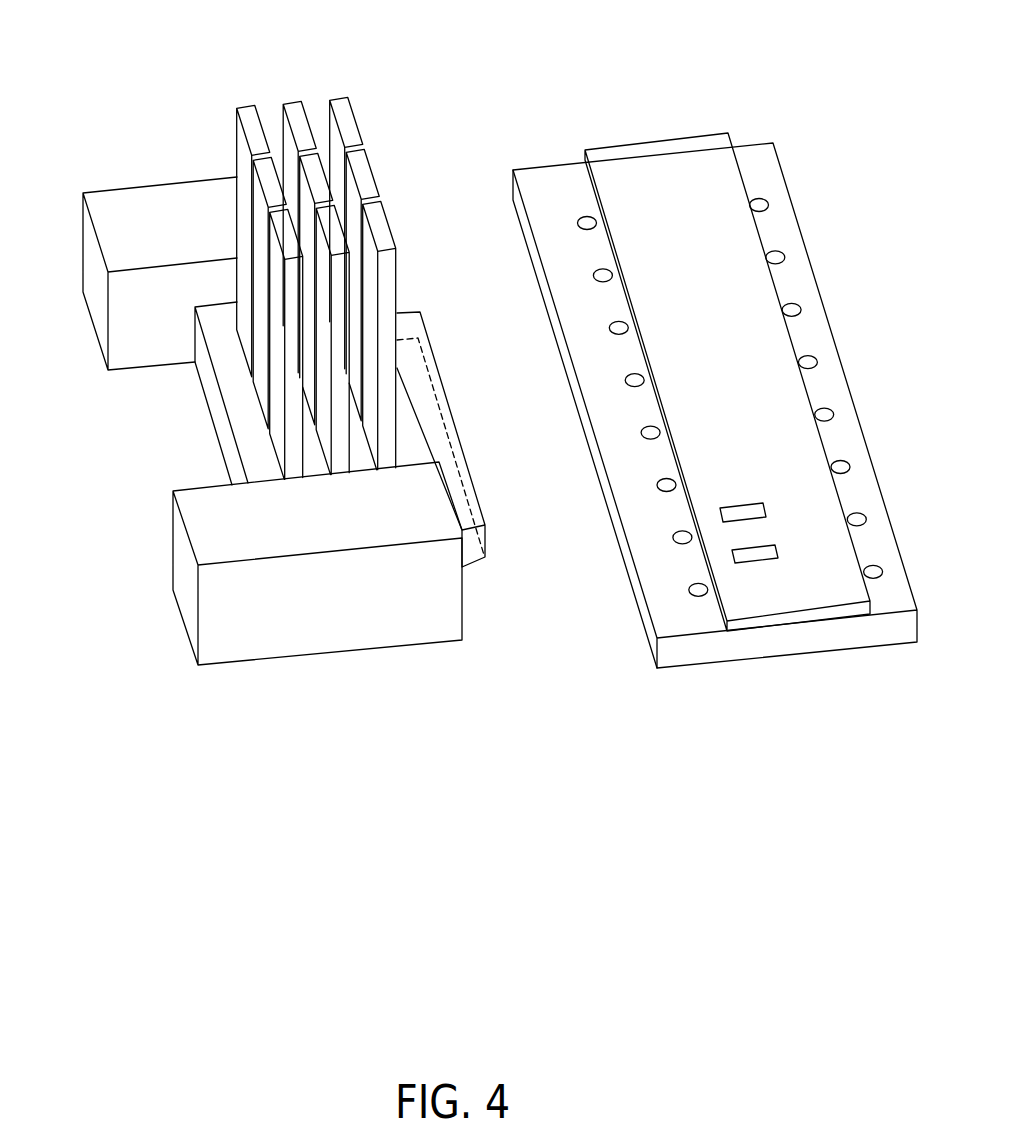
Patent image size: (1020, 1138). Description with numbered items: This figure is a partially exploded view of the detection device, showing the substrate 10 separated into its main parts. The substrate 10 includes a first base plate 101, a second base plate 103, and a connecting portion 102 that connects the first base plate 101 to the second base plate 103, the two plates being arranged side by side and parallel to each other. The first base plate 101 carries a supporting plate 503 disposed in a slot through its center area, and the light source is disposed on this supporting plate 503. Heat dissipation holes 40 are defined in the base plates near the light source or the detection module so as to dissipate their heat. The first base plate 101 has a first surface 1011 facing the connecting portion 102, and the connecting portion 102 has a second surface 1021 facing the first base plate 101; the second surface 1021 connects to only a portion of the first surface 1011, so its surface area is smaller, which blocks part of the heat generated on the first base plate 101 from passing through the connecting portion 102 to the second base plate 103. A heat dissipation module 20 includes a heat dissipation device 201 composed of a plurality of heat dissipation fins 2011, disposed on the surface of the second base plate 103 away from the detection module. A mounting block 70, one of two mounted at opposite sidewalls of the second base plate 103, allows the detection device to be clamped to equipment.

The substrate 10 is at (372, 710).
The first base plate 101 is at (654, 582).
The first surface 1011 is at (536, 253).
The connecting portion 102 is at (427, 383).
The second surface 1021 is at (447, 403).
The second base plate 103 is at (248, 418).
The heat dissipation module 20 is at (294, 241).
The heat dissipation device 201 is at (290, 102).
The heat dissipation fin 2011 is at (348, 113).
The heat dissipation hole 40 is at (781, 251).
The supporting plate 503 is at (660, 188).
The mounting block 70 is at (120, 333).